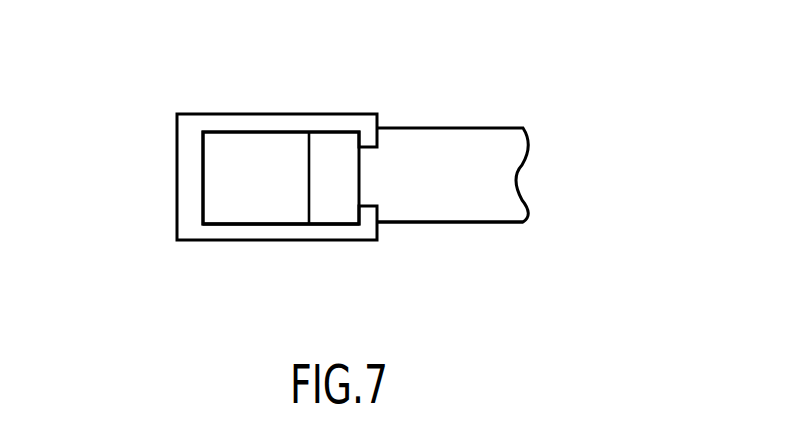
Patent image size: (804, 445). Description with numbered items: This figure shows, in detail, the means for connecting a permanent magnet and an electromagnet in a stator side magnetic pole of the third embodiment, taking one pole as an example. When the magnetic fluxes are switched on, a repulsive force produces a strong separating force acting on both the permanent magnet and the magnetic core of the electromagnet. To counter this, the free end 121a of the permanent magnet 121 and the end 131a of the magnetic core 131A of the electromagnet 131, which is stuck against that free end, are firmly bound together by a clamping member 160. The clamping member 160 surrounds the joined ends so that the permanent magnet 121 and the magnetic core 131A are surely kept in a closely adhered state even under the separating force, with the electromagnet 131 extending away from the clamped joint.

The clamping member 160 is at (178, 205).
The permanent magnet 121 is at (228, 225).
The free end of the permanent magnet 121a is at (285, 208).
The electromagnet 131 is at (457, 128).
The end of the magnetic core 131a is at (330, 148).
The magnetic core 131A is at (457, 212).